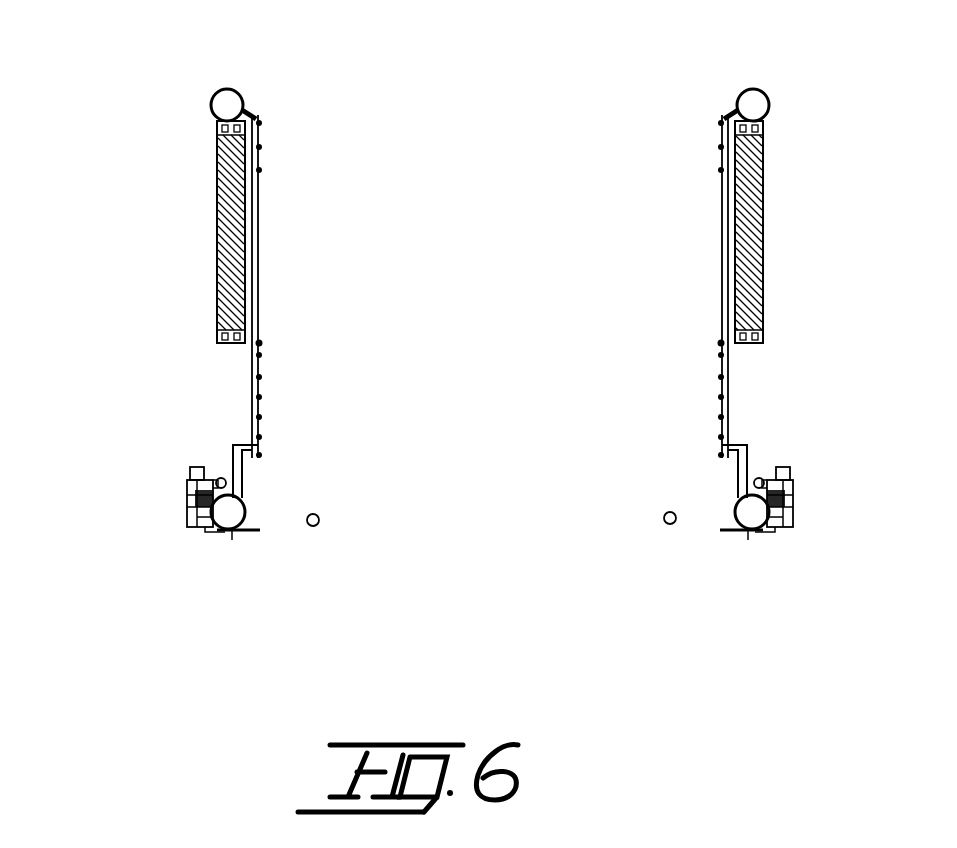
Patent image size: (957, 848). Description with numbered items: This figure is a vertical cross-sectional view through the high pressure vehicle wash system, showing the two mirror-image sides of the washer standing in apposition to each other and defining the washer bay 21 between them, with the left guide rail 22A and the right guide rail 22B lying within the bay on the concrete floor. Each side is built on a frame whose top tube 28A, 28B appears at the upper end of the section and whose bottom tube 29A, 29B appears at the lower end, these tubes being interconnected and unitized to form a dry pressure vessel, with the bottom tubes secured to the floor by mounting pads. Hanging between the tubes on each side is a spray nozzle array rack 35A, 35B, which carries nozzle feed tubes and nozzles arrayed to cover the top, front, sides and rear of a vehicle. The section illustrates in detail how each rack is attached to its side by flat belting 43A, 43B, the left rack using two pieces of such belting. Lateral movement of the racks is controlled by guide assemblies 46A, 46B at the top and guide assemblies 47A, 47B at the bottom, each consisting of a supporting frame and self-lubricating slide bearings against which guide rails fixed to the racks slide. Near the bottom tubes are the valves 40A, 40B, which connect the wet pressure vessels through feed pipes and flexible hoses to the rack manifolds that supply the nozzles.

The washer bay 21 is at (500, 438).
The left guide rail 22A is at (318, 515).
The right guide rail 22B is at (668, 512).
The top tube 28A is at (217, 94).
The top tube 28B is at (765, 89).
The bottom tube 29A is at (232, 532).
The bottom tube 29B is at (750, 532).
The spray nozzle array rack 35A is at (264, 348).
The spray nozzle array rack 35B is at (716, 352).
The valve 40A is at (196, 518).
The valve 40B is at (790, 517).
The flat belting 43A is at (217, 237).
The flat belting 43B is at (763, 237).
The guide assembly 46A is at (258, 112).
The guide assembly 46B is at (713, 110).
The guide assembly 47A is at (222, 438).
The guide assembly 47B is at (768, 432).